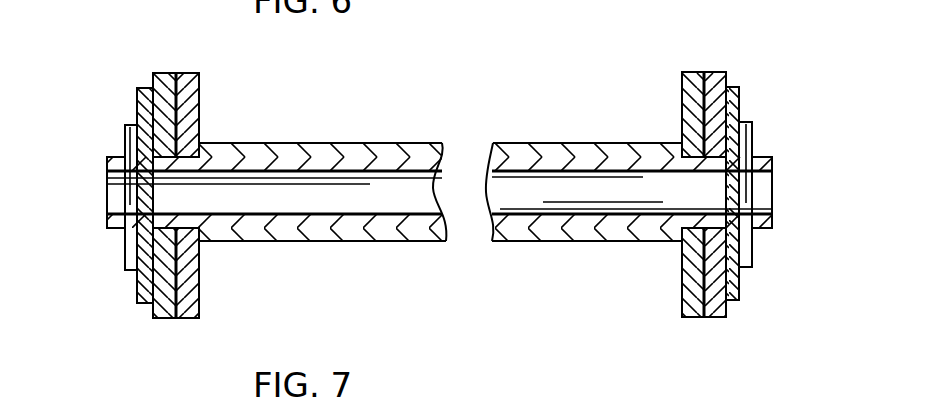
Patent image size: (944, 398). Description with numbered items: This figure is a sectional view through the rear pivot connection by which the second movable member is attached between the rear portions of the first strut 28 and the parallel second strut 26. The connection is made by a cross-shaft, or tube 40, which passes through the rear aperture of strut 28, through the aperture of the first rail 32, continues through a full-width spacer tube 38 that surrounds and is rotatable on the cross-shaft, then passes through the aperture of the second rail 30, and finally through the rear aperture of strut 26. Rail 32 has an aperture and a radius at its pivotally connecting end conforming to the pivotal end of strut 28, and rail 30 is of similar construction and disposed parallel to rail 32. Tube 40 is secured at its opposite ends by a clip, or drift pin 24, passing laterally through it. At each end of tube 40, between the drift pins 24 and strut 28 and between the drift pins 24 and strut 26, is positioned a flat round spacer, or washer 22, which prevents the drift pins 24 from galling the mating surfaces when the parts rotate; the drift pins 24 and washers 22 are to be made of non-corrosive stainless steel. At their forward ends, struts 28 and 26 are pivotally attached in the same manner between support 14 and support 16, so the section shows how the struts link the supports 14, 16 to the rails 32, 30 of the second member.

In FIG. 7, the support 14 is at (790, 397).
In FIG. 7, the support 16 is at (123, 397).
In FIG. 6, the washer 22 is at (137, 290).
In FIG. 6, the drift pin 24 is at (127, 127).
In FIG. 6, the second strut 26 is at (717, 72).
In FIG. 6, the first strut 28 is at (172, 73).
In FIG. 6, the second rail 30 is at (683, 102).
In FIG. 6, the first rail 32 is at (200, 288).
In FIG. 6, the spacer tube 38 is at (350, 145).
In FIG. 6, the cross-shaft tube 40 is at (765, 192).